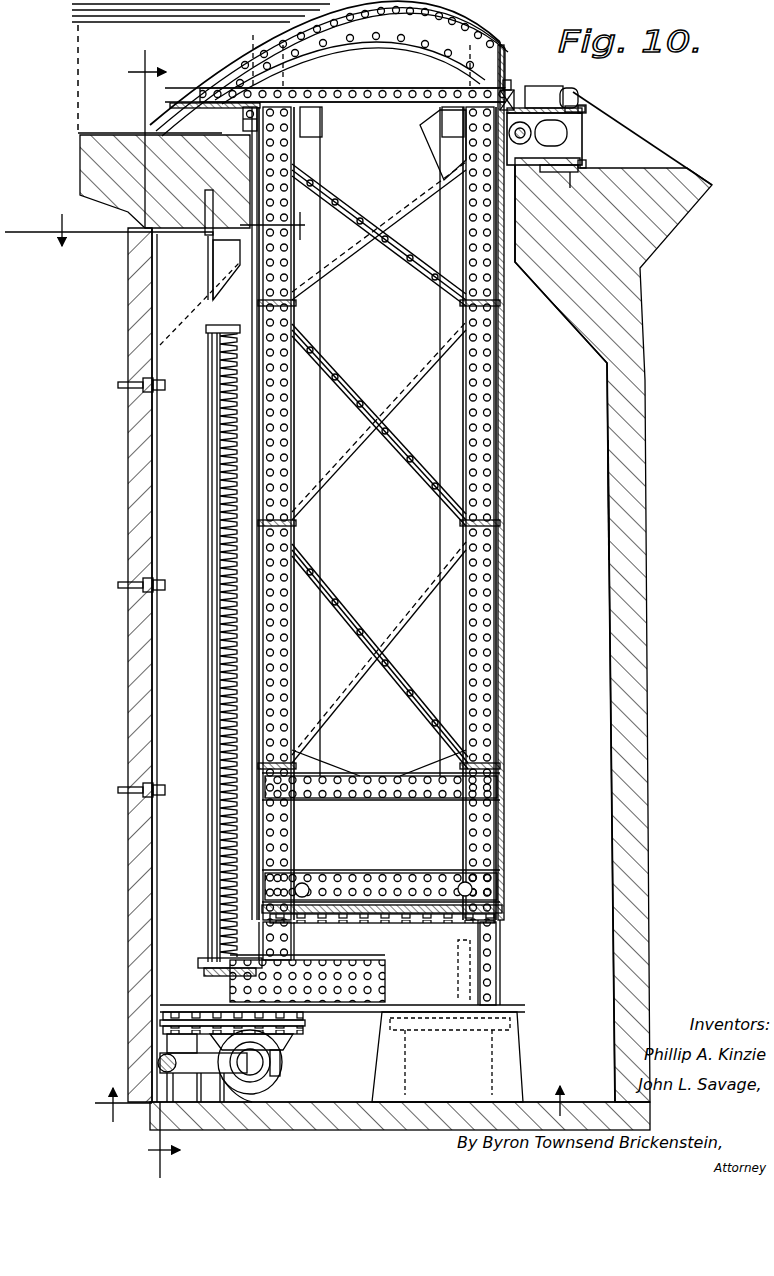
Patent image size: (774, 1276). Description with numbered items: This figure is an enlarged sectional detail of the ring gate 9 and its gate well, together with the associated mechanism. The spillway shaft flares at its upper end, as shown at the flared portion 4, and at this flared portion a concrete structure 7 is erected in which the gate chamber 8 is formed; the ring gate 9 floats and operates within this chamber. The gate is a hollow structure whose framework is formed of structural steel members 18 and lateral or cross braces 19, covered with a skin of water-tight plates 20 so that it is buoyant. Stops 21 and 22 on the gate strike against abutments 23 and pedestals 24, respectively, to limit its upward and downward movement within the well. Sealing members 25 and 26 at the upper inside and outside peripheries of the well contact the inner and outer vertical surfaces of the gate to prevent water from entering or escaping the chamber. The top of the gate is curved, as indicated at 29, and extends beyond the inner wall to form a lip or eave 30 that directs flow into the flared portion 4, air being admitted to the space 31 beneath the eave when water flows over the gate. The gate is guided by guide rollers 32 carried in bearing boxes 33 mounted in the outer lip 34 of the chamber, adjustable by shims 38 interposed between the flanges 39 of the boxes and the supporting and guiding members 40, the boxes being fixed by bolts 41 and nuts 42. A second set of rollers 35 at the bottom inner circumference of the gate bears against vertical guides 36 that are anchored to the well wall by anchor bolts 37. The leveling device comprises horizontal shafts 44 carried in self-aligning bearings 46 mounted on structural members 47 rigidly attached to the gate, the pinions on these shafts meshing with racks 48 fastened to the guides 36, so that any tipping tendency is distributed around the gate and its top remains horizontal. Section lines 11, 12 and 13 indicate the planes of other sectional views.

The flared portion 4 is at (105, 168).
The concrete structure 7 is at (628, 445).
The gate chamber 8 is at (612, 526).
The ring gate 9 is at (502, 672).
The section line 11 is at (333, 1100).
The section line 12 is at (146, 601).
The section line 13 is at (170, 229).
The structural steel members 18 is at (455, 293).
The lateral or cross braces 19 is at (380, 456).
The water-tight plates 20 is at (258, 654).
The stops 21 is at (218, 958).
The stops 22 is at (442, 1010).
The abutments 23 is at (205, 245).
The pedestals 24 is at (447, 1057).
The sealing member 25 is at (243, 115).
The sealing member 26 is at (507, 90).
The curved top portion 29 is at (250, 40).
The lip or eave 30 is at (160, 120).
The space beneath the eave 31 is at (205, 95).
The guide rollers 32 is at (494, 134).
The bearing boxes 33 is at (583, 136).
The outer lip 34 is at (494, 172).
The rollers 35 is at (283, 1060).
The vertical guides 36 is at (152, 720).
The anchor bolts 37 is at (122, 388).
The shims 38 is at (605, 218).
The flanges 39 is at (583, 108).
The supporting and guiding members 40 is at (575, 92).
The bolts 41 is at (556, 88).
The nuts 42 is at (586, 110).
The shafts 44 is at (160, 1060).
The self-aligning bearings 46 is at (243, 1094).
The structural members 47 is at (350, 975).
The racks 48 is at (224, 817).